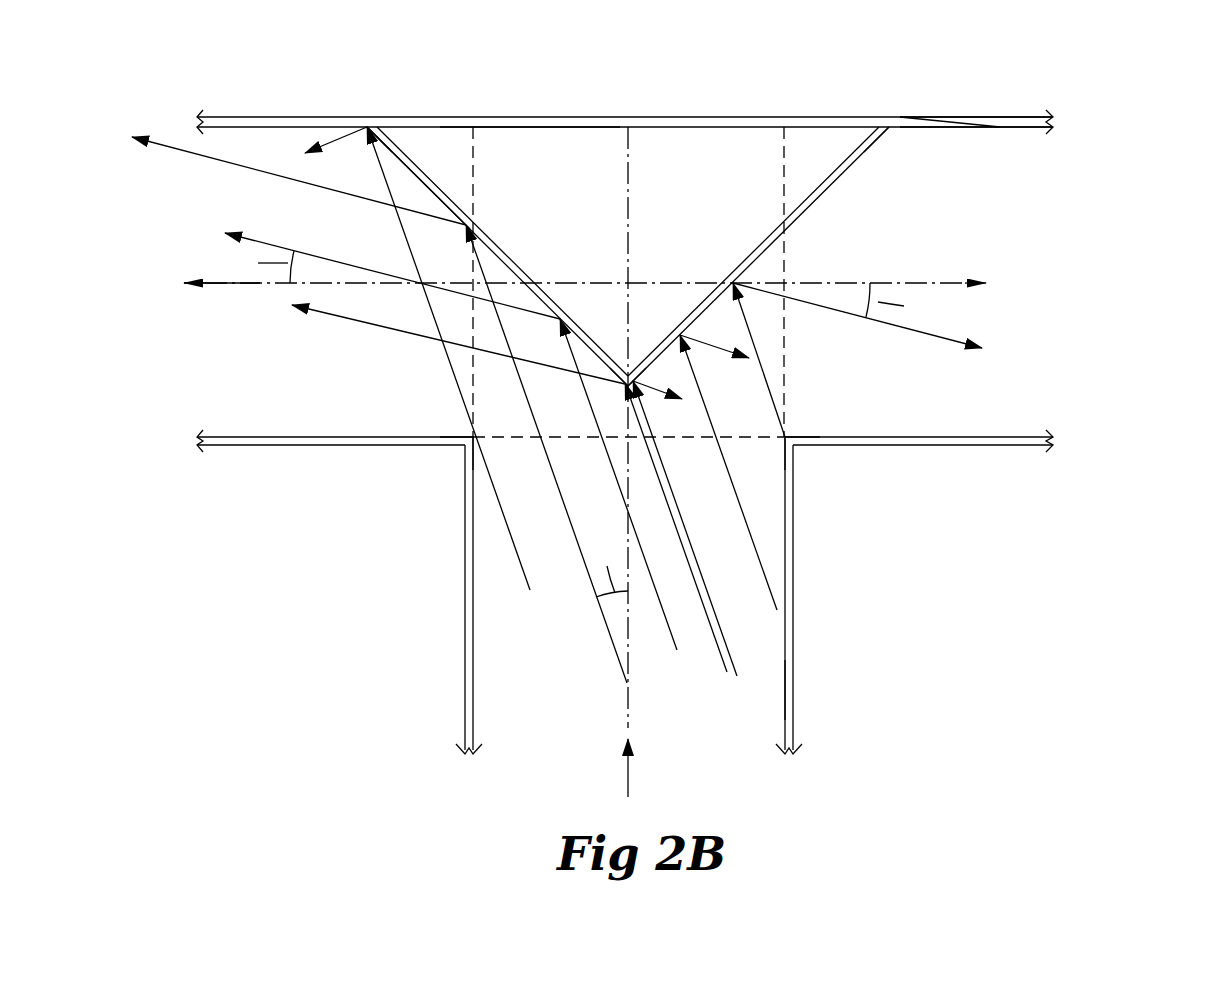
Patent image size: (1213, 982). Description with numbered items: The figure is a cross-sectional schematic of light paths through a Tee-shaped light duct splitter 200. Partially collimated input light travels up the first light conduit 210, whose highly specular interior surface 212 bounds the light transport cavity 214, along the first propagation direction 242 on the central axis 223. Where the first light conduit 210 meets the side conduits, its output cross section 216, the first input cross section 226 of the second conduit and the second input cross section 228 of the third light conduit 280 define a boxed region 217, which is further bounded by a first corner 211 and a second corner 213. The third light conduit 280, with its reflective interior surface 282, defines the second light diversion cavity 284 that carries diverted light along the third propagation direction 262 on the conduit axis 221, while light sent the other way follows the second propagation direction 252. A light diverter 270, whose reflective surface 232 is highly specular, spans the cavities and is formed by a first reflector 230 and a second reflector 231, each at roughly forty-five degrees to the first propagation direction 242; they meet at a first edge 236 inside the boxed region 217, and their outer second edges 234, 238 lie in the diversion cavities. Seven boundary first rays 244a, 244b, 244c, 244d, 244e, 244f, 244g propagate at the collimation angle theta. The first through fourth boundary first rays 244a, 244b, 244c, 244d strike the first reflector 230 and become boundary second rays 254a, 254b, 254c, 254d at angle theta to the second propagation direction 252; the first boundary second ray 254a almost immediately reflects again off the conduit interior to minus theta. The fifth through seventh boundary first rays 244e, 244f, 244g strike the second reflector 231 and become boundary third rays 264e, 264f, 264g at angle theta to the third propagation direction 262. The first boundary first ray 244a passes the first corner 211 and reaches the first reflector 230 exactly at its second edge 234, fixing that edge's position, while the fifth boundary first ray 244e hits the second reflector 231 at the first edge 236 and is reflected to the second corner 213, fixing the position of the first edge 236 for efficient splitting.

The light duct splitter 200 is at (1107, 92).
The light diverter 270 is at (667, 110).
The third light conduit 280 is at (1040, 118).
The interior surface of third light conduit 282 is at (983, 128).
The second light diversion cavity 284 is at (918, 157).
The boxed region 217 is at (517, 140).
The first reflector 230 is at (500, 256).
The second reflector 231 is at (736, 277).
The reflective surface 232 is at (413, 182).
The second edge of first reflector 234 is at (370, 127).
The first edge 236 is at (623, 378).
The second edge of second reflector 238 is at (885, 120).
The first input cross section 226 is at (478, 190).
The second input cross section 228 is at (781, 168).
The third propagation direction 262 is at (915, 279).
The axis of third light conduit 221 is at (1025, 279).
The second propagation direction 252 is at (208, 285).
The central axis 223 is at (628, 713).
The first propagation direction 242 is at (628, 772).
The first light conduit 210 is at (791, 737).
The interior surface of first light conduit 212 is at (790, 720).
The light transport cavity 214 is at (776, 675).
The first corner 211 is at (465, 448).
The second corner 213 is at (794, 448).
The output cross section 216 is at (502, 440).
The first boundary first ray 244a is at (532, 589).
The second boundary first ray 244b is at (597, 599).
The third boundary first ray 244c is at (675, 652).
The fourth boundary first ray 244d is at (727, 674).
The fifth boundary first ray 244e is at (733, 647).
The sixth boundary first ray 244f is at (773, 587).
The seventh boundary first ray 244g is at (767, 367).
The first boundary second ray 254a is at (340, 138).
The second boundary second ray 254b is at (183, 155).
The third boundary second ray 254c is at (273, 243).
The fourth boundary second ray 254d is at (350, 322).
The fifth boundary third ray 264e is at (653, 392).
The sixth boundary third ray 264f is at (722, 355).
The seventh boundary third ray 264g is at (933, 336).